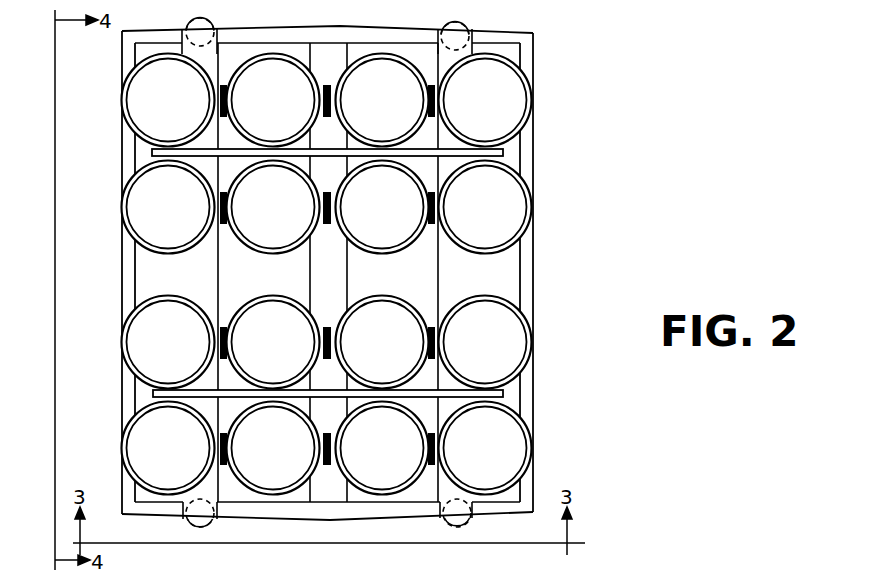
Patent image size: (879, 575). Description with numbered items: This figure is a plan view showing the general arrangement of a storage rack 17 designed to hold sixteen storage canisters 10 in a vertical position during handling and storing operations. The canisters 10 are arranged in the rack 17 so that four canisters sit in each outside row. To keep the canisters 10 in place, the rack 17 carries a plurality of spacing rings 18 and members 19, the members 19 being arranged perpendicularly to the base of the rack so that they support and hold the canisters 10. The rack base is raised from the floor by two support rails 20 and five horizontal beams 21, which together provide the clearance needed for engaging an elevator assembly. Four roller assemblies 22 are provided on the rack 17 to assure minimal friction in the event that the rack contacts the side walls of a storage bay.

The storage canisters 10 is at (159, 109).
The storage rack 17 is at (571, 113).
The spacing rings 18 is at (529, 312).
The members 19 is at (152, 152).
The support rails 20 is at (534, 34).
The horizontal beams 21 is at (122, 264).
The roller assemblies 22 is at (467, 27).